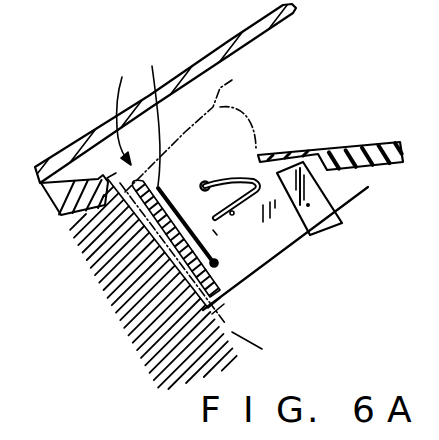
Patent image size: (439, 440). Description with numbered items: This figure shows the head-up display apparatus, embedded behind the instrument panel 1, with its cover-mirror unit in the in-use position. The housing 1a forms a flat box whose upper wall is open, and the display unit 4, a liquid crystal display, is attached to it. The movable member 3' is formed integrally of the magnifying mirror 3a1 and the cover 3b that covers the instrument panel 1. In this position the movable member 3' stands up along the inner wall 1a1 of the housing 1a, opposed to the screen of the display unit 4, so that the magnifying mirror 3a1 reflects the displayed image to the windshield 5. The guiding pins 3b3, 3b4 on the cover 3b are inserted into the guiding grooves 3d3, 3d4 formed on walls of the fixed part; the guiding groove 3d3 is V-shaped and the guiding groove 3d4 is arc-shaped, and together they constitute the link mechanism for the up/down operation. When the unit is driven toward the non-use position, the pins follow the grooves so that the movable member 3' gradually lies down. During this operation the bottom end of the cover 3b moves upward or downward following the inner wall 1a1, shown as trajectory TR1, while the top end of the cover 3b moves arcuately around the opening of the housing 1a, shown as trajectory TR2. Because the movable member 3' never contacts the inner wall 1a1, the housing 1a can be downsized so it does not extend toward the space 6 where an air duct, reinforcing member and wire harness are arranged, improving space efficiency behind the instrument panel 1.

The instrument panel 1 is at (363, 145).
The housing 1a is at (311, 237).
The inner wall 1a1 is at (262, 349).
The movable member 3' is at (95, 118).
The magnifying mirror 3a1 is at (130, 116).
The cover 3b is at (120, 183).
The guiding pin 3b3 is at (212, 188).
The guiding pin 3b4 is at (200, 236).
The guiding groove 3d3 is at (236, 219).
The guiding groove 3d4 is at (217, 235).
The display unit 4 is at (320, 212).
The windshield 5 is at (174, 73).
The space 6 is at (140, 267).
The trajectory of bottom end TR1 is at (130, 242).
The trajectory of top end TR2 is at (232, 80).